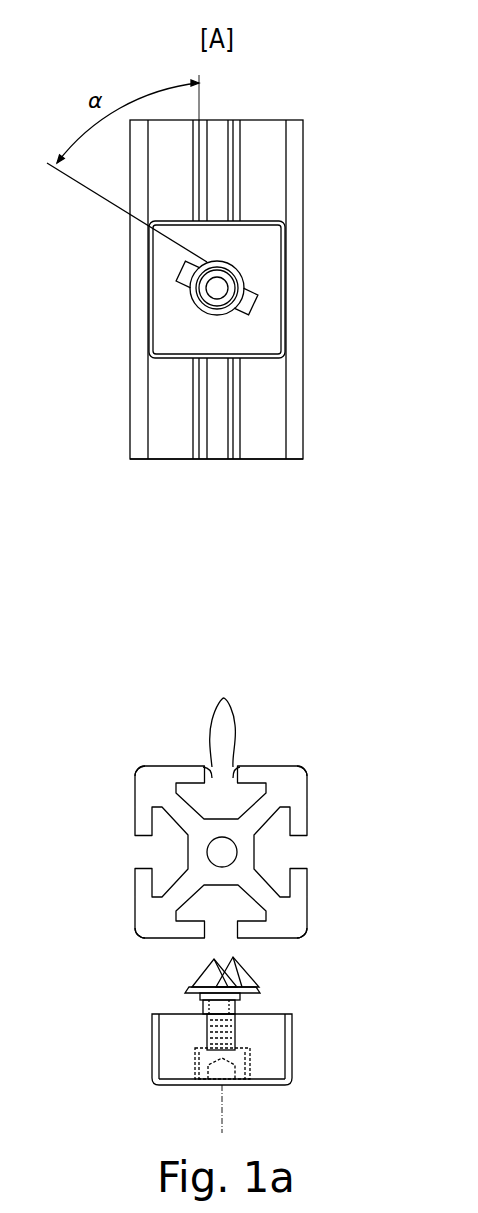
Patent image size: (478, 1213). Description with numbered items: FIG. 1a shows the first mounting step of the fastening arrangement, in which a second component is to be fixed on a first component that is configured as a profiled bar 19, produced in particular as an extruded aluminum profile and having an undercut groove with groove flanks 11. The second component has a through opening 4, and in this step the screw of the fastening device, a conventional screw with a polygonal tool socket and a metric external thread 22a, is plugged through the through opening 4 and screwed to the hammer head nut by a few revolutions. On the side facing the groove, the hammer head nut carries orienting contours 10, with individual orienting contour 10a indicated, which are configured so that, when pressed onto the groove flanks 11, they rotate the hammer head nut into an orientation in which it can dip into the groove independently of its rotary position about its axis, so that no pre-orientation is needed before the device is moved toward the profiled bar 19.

The profiled bar 19 is at (265, 160).
The through opening 4 is at (205, 1032).
The orienting contours 10 is at (319, 953).
The spring tongue 10a is at (246, 969).
The groove flanks 11 is at (223, 722).
The metric external thread 22a is at (238, 1033).